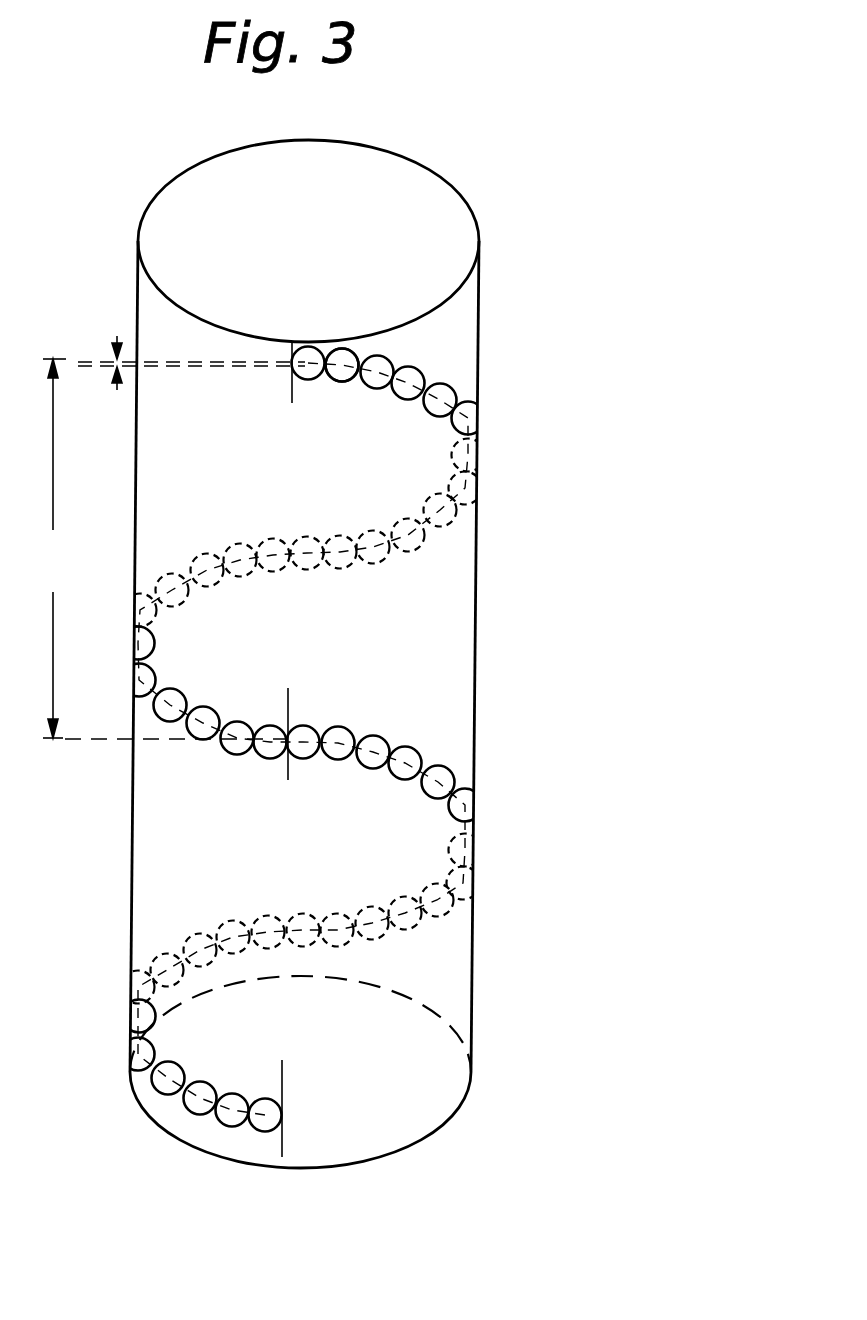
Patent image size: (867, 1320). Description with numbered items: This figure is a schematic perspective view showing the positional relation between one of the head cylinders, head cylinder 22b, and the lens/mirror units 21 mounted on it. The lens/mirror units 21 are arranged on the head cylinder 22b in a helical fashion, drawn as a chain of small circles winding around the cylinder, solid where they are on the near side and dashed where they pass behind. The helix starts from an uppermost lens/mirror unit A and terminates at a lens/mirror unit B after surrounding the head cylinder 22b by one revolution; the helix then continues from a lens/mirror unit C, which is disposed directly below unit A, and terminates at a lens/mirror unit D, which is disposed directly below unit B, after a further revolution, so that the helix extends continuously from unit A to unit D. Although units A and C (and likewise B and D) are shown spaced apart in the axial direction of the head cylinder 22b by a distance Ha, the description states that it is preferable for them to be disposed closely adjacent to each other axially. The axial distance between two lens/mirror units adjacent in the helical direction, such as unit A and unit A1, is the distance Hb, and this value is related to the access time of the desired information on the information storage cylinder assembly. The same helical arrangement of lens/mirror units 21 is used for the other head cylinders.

The head cylinder 22b is at (425, 168).
The lens/mirror units 21 is at (296, 489).
The axial distance between units A and C Ha is at (160, 549).
The axial distance between helically adjacent units Hb is at (191, 378).
The uppermost lens/mirror unit A is at (304, 380).
The lens/mirror unit adjacent to unit A A1 is at (342, 384).
The lens/mirror unit terminating the first revolution B is at (275, 714).
The lens/mirror unit disposed directly below unit A C is at (302, 768).
The lens/mirror unit disposed directly below unit B D is at (268, 1108).